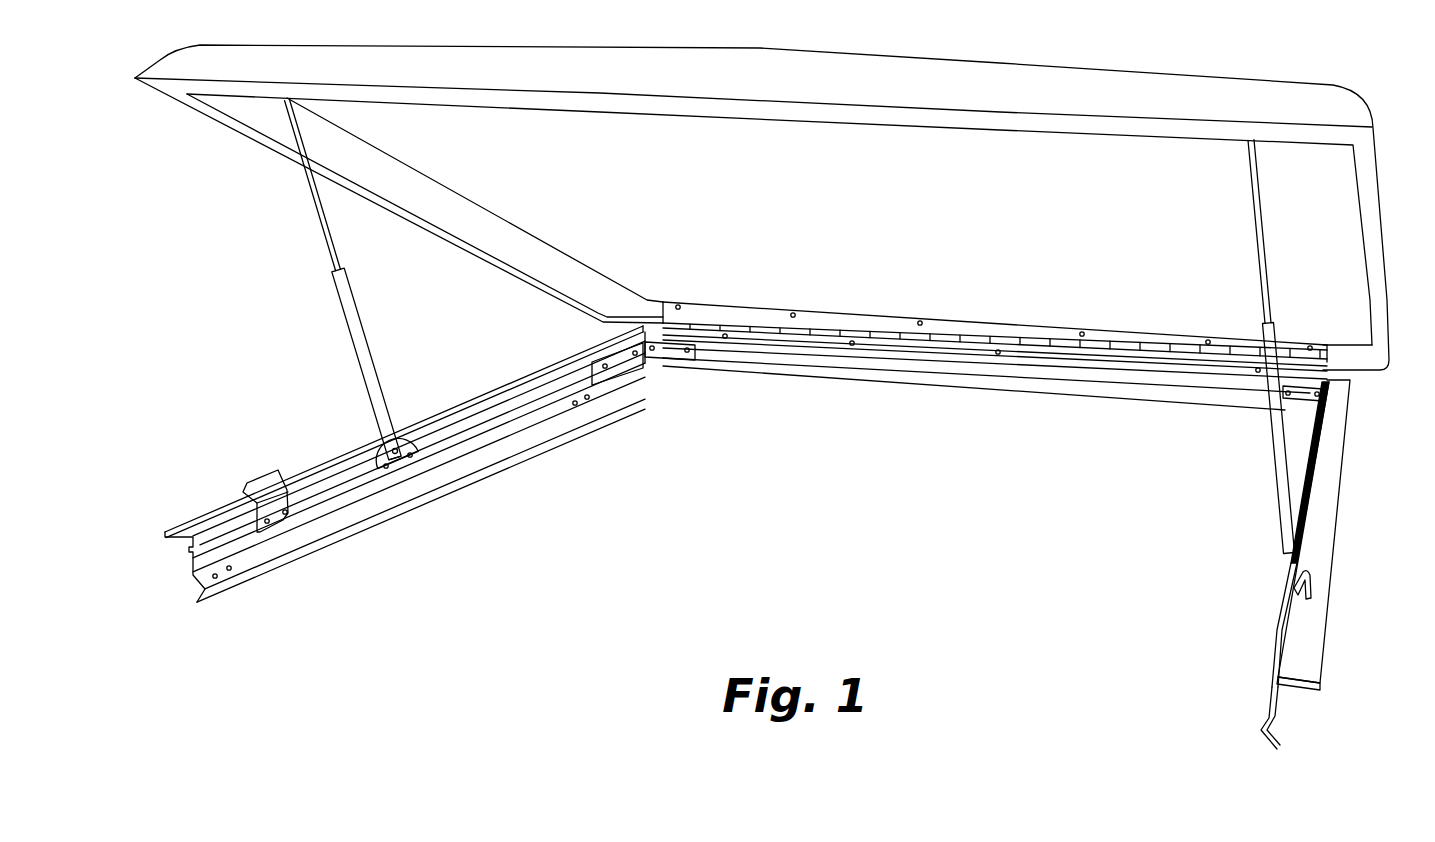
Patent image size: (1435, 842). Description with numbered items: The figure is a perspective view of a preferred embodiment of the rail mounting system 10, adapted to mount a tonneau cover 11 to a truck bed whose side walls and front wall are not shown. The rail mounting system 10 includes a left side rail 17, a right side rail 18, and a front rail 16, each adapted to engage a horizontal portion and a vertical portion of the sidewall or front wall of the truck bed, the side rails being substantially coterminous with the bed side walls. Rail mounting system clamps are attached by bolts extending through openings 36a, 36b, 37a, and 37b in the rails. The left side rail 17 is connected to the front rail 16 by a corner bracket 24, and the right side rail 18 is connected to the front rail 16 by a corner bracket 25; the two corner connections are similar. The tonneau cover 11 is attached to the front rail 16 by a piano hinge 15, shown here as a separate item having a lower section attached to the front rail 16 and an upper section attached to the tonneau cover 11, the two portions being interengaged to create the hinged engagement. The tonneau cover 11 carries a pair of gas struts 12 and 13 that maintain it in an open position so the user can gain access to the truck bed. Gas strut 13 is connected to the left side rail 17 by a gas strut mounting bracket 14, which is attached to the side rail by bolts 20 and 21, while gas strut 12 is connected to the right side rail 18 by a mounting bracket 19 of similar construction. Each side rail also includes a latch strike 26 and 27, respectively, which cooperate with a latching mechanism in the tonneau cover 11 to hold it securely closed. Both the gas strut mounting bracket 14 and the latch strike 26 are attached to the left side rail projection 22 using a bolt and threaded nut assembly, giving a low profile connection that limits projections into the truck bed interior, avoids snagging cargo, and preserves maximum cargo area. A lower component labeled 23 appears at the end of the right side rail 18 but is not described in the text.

The rail mounting system 10 is at (1356, 510).
The tonneau cover 11 is at (1187, 96).
The gas strut 12 is at (1253, 243).
The gas strut 13 is at (353, 302).
The gas strut mounting bracket 14 is at (410, 437).
The piano hinge 15 is at (768, 313).
The front rail 16 is at (903, 367).
The left side rail 17 is at (313, 528).
The right side rail 18 is at (1305, 657).
The mounting bracket 19 is at (1290, 553).
The bolt 20 is at (400, 467).
The bolt 21 is at (440, 455).
The left side rail projection 22 is at (188, 553).
The lower latch hook 23 is at (1268, 693).
The corner bracket 24 is at (677, 352).
The corner bracket 25 is at (1297, 393).
The latch strike 26 is at (263, 480).
The latch strike 27 is at (1280, 603).
The opening 36a is at (218, 580).
The opening 36b is at (240, 568).
The opening 37a is at (580, 405).
The opening 37b is at (597, 393).